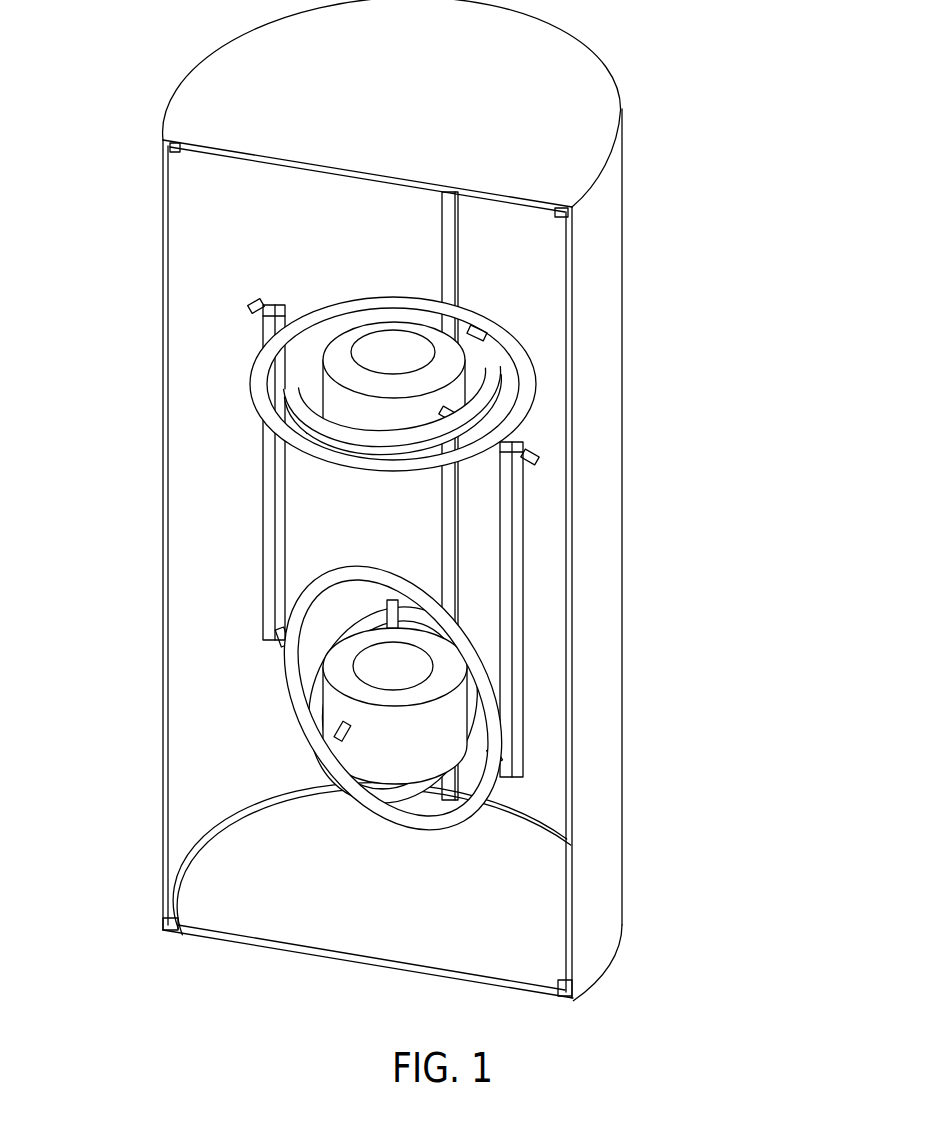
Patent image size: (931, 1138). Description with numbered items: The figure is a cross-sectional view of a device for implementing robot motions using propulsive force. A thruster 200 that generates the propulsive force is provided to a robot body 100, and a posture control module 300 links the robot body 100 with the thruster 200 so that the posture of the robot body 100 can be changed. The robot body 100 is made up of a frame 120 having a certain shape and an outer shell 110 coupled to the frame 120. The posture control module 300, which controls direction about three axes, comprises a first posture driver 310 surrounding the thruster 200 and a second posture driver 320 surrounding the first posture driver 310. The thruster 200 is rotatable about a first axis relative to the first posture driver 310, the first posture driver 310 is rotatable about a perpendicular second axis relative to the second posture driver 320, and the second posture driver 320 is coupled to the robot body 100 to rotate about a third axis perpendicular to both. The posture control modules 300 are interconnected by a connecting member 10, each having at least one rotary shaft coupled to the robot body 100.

The connecting member 10 is at (518, 590).
The robot body 100 is at (498, 500).
The outer shell 110 is at (613, 220).
The frame 120 is at (448, 280).
The thruster 200 is at (333, 392).
The posture control module 300 is at (542, 384).
The first posture driver 310 is at (493, 368).
The second posture driver 320 is at (513, 413).